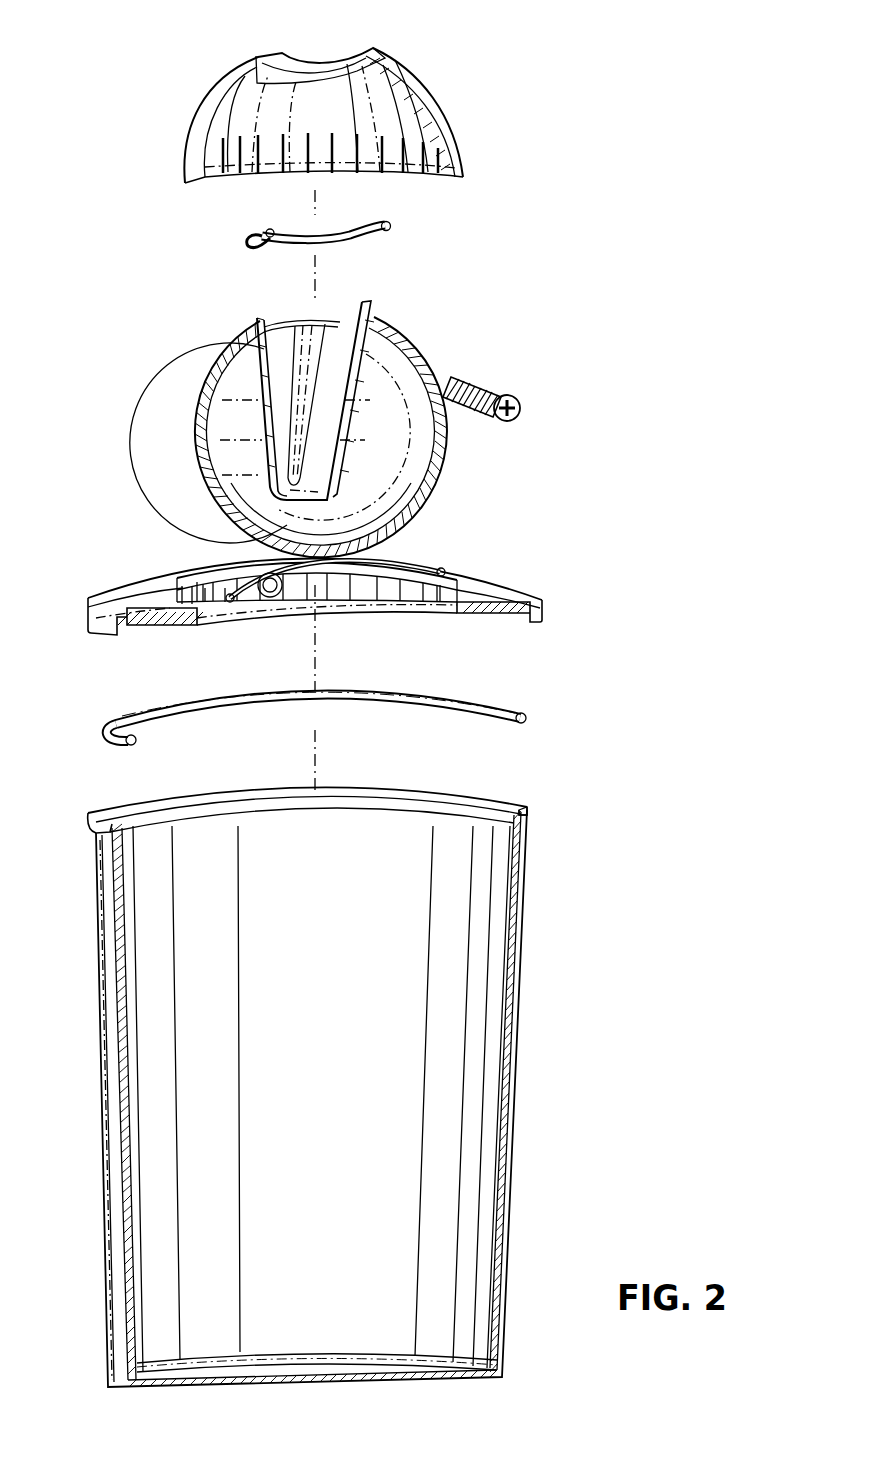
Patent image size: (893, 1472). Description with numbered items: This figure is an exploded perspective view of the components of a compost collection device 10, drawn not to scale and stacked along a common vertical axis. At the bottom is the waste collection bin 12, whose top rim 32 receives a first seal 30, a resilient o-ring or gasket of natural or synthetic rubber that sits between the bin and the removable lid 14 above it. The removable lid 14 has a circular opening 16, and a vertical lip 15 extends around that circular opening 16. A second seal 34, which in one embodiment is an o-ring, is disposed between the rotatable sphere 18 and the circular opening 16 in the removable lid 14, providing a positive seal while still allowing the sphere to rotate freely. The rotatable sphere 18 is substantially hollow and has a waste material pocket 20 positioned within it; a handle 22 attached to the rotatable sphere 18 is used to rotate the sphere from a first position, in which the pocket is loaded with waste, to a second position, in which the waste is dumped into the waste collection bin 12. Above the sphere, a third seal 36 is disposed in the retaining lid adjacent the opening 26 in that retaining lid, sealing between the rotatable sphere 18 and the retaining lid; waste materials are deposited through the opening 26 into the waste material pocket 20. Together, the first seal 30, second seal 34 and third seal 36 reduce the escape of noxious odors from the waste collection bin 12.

The compost collection device 10 is at (660, 643).
The waste collection bin 12 is at (351, 1087).
The removable lid 14 is at (321, 586).
The vertical lip 15 is at (182, 598).
The circular opening 16 is at (228, 630).
The rotatable sphere 18 is at (272, 416).
The waste material pocket 20 is at (343, 355).
The handle 22 is at (513, 397).
The opening 26 is at (313, 58).
The first seal 30 is at (530, 710).
The top rim 32 is at (537, 808).
The second seal 34 is at (442, 566).
The third seal 36 is at (390, 229).